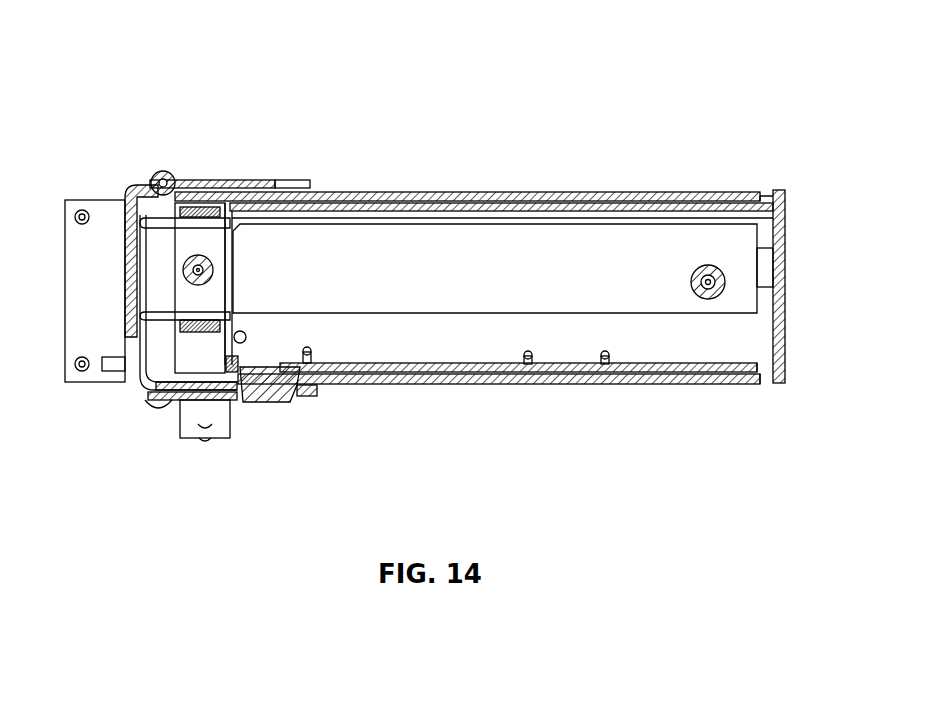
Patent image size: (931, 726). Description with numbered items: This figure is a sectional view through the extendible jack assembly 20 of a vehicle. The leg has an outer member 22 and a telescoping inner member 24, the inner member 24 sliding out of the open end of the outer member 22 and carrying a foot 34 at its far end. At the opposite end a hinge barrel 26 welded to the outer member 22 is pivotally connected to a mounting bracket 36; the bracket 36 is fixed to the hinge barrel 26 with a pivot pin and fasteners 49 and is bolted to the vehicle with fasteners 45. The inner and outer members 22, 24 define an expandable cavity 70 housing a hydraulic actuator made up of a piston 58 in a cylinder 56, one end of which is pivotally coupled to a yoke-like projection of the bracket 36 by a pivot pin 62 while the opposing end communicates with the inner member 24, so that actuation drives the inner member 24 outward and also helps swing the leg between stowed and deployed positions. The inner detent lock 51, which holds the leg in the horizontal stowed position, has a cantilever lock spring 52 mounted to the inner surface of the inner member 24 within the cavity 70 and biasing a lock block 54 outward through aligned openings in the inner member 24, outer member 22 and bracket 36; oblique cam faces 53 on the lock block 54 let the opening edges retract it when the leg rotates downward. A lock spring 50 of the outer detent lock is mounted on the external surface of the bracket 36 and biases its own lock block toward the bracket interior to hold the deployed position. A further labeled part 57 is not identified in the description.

The jack assembly 20 is at (240, 58).
The outer member 22 is at (378, 192).
The inner member 24 is at (455, 204).
The hinge barrel 26 is at (140, 388).
The foot 34 is at (782, 193).
The mounting bracket 36 is at (100, 207).
The fasteners 45 is at (82, 210).
The fasteners 49 is at (165, 172).
The lock spring 50 is at (188, 426).
The inner detent lock 51 is at (257, 440).
The lock spring 52 is at (300, 362).
The cam face 53 is at (298, 398).
The lock block 54 is at (272, 386).
The cylinder 56 is at (535, 240).
The frame 57 is at (165, 296).
The piston 58 is at (768, 266).
The pivot pin 62 is at (205, 210).
The expandable cavity 70 is at (676, 333).